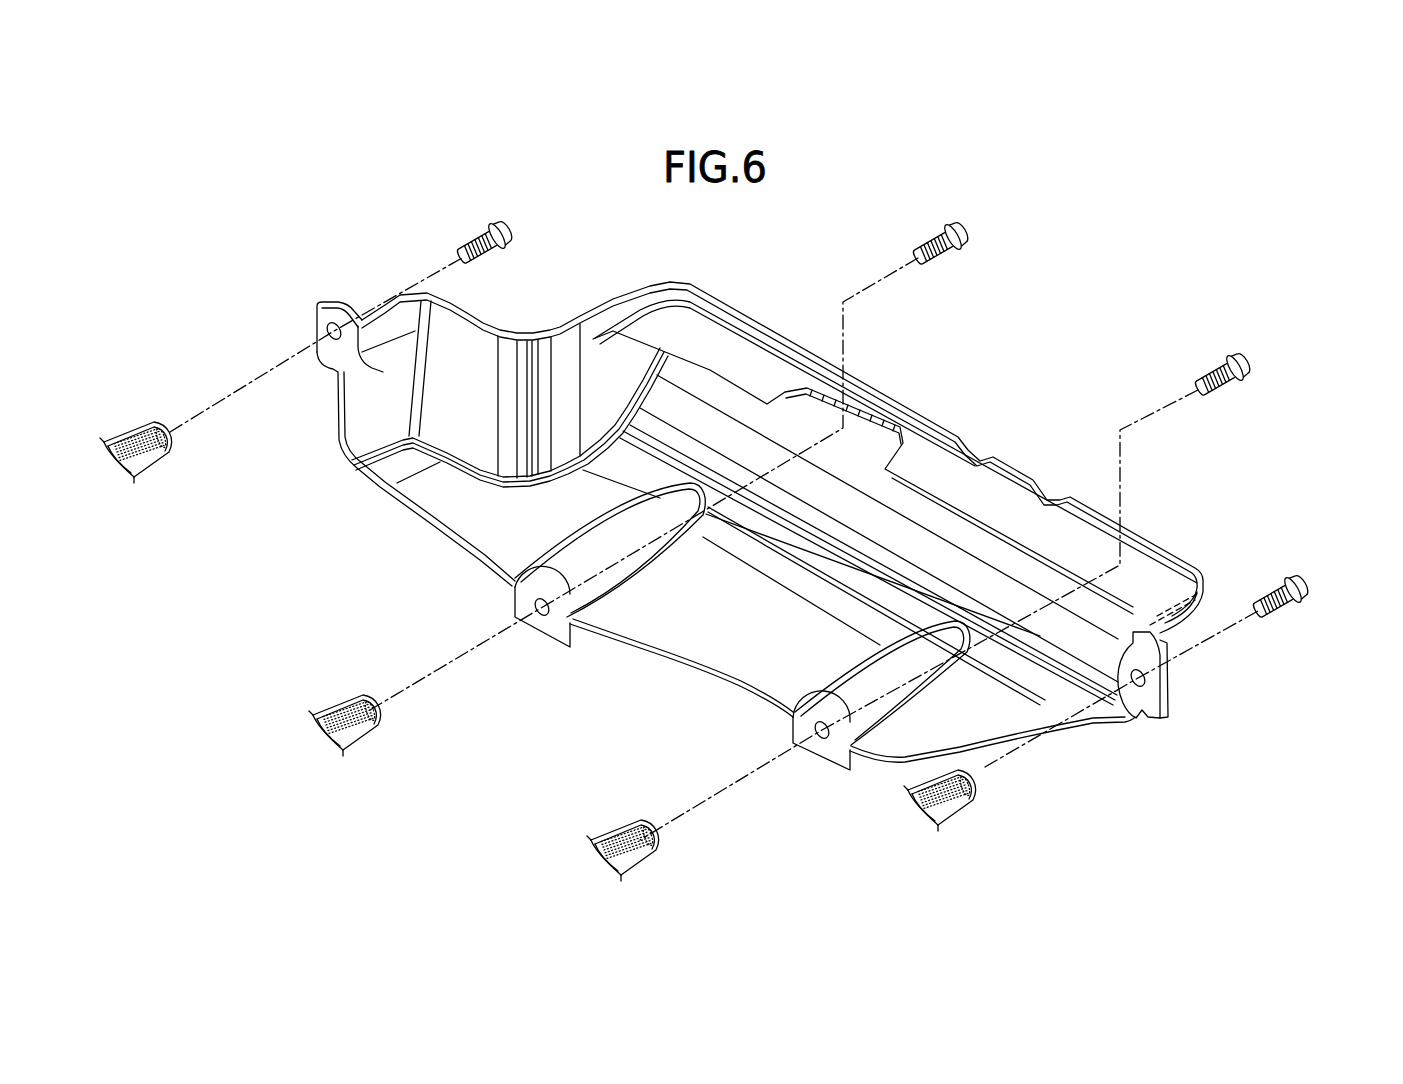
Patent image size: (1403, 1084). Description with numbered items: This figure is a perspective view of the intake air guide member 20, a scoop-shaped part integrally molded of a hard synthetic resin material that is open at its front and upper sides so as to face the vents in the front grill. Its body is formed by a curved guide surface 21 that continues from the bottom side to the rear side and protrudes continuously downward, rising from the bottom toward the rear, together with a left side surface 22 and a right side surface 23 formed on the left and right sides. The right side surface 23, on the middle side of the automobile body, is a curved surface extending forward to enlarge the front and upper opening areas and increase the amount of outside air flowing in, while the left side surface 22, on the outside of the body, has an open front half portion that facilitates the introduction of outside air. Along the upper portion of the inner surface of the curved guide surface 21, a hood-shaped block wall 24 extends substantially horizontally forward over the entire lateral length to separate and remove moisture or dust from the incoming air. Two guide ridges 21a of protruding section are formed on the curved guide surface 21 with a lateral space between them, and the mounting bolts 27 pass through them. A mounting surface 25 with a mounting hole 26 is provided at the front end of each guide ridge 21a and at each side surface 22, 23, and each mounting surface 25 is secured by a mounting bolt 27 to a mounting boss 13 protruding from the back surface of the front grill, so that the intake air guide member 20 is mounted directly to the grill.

The mounting boss 13 is at (133, 430).
The intake air guide member 20 is at (762, 312).
The curved guide surface 21 is at (738, 549).
The guide ridge 21a is at (592, 553).
The left side surface 22 is at (1160, 647).
The right side surface 23 is at (570, 348).
The block wall 24 is at (950, 470).
The mounting surface 25 is at (325, 350).
The mounting hole 26 is at (330, 325).
The mounting bolt 27 is at (510, 226).